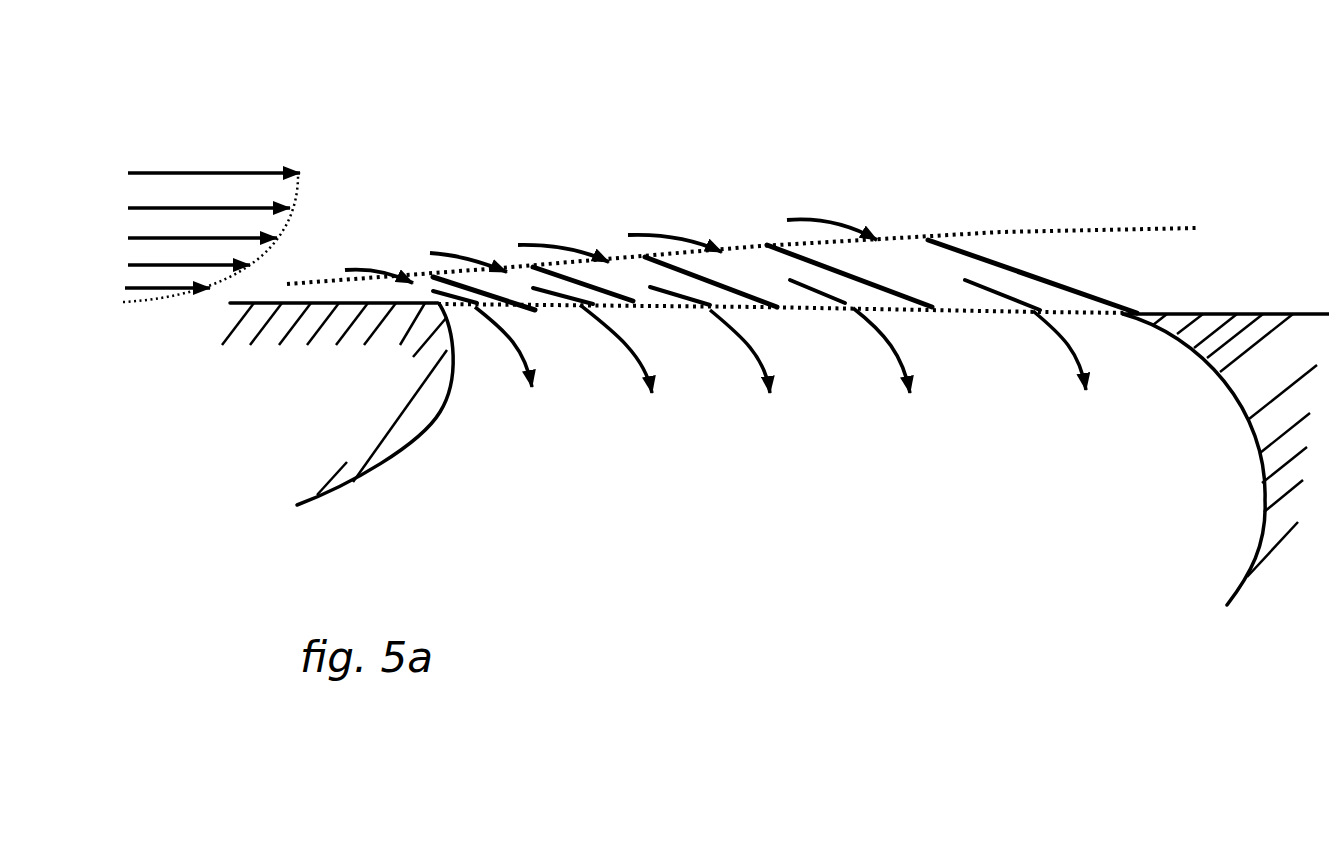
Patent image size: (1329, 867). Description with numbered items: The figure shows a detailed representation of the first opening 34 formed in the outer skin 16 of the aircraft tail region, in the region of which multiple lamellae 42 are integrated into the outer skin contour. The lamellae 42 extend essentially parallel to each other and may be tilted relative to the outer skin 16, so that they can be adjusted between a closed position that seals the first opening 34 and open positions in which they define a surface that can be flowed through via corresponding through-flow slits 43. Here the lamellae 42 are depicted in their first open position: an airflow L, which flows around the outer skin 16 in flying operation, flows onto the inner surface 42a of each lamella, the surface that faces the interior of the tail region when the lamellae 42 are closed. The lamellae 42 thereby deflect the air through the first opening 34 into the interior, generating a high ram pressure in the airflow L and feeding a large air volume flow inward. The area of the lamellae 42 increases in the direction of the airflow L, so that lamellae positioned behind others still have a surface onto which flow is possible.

The airflow L is at (193, 197).
The outer skin 16 is at (1223, 314).
The first opening 34 is at (970, 312).
The lamellae 42 is at (455, 272).
The inner surface 42a is at (480, 310).
The through-flow slits 43 is at (412, 292).